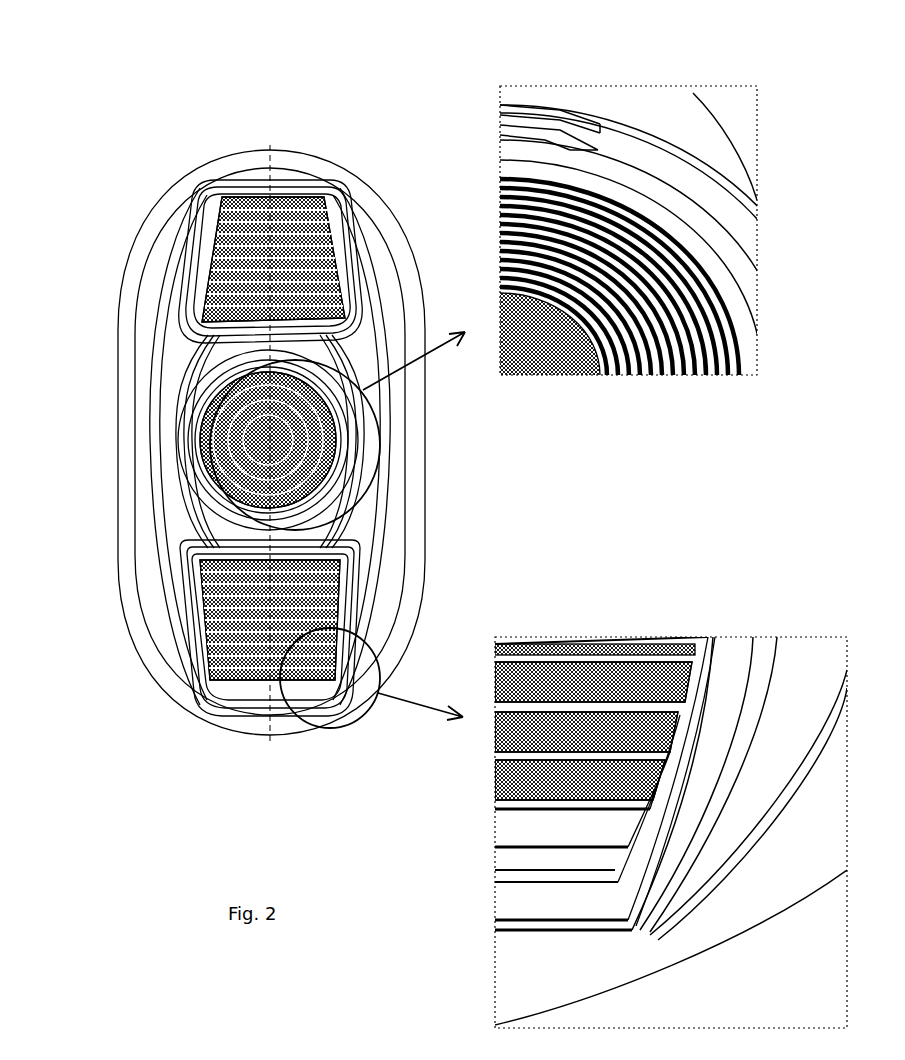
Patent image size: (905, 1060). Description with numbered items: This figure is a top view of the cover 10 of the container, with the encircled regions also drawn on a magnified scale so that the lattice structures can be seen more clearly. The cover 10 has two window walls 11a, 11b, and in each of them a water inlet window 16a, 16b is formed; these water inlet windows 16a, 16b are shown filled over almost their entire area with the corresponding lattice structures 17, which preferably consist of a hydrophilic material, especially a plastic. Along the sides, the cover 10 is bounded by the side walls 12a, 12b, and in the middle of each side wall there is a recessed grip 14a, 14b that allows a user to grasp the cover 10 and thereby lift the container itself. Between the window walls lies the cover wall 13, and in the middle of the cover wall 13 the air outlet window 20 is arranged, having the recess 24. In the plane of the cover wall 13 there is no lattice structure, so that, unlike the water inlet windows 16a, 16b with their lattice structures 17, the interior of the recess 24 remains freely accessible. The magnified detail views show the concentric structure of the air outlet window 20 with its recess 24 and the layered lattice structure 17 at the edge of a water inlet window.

The cover 10 is at (199, 114).
The window wall 11a is at (328, 200).
The window wall 11b is at (222, 690).
The side wall 12a is at (375, 570).
The side wall 12b is at (160, 330).
The cover wall 13 is at (335, 500).
The recessed grip 14a is at (395, 465).
The recessed grip 14b is at (142, 440).
The water inlet window 16a is at (240, 192).
The water inlet window 16b is at (200, 615).
The lattice structure 17 is at (203, 265).
The air outlet window 20 is at (205, 497).
The recess 24 is at (210, 445).